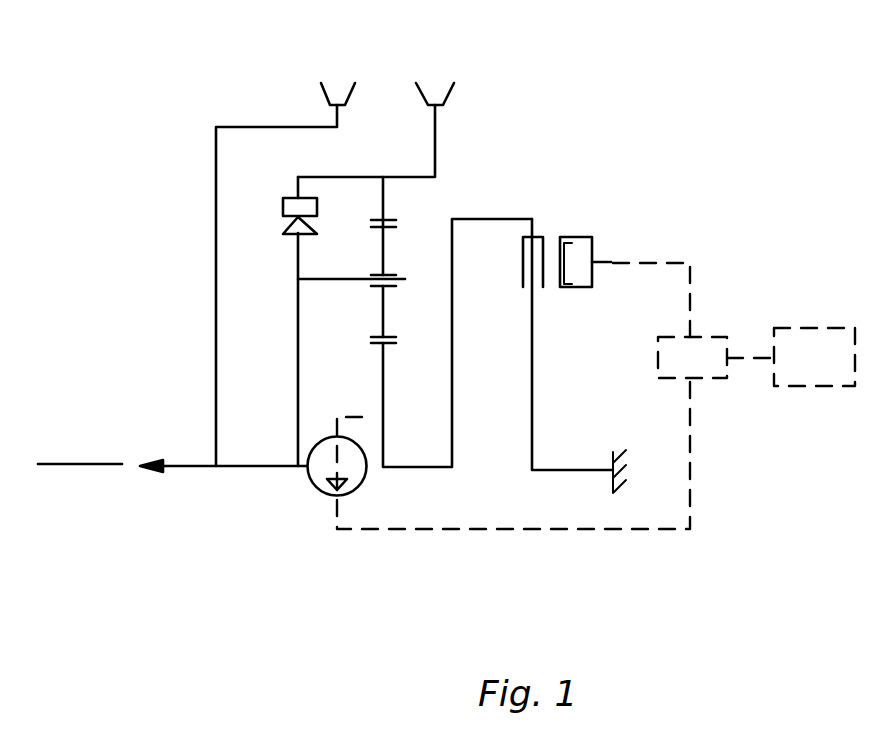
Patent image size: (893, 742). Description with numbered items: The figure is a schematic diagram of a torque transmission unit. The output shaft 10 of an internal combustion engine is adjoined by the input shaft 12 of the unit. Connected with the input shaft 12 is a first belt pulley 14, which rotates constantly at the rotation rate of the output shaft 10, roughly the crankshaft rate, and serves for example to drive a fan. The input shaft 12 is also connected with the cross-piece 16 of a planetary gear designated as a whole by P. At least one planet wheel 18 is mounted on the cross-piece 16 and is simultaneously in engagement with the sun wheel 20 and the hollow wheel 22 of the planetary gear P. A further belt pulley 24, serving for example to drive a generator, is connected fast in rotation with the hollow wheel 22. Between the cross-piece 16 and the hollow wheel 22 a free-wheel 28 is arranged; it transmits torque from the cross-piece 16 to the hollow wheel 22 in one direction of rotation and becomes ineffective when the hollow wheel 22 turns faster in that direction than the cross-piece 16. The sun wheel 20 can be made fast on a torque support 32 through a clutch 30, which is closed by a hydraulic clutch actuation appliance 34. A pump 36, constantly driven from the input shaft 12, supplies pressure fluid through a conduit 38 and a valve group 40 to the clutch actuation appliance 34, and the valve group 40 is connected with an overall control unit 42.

The output shaft 10 is at (75, 466).
The input shaft 12 is at (253, 468).
The first belt pulley 14 is at (216, 302).
The cross-piece 16 is at (298, 365).
The planet wheel 18 is at (384, 317).
The sun wheel 20 is at (383, 413).
The hollow wheel 22 is at (386, 200).
The further belt pulley 24 is at (435, 134).
The free-wheel 28 is at (284, 221).
The clutch 30 is at (538, 236).
The torque support 32 is at (533, 362).
The hydraulic clutch actuation appliance 34 is at (592, 250).
The pump 36 is at (318, 483).
The conduit 38 is at (537, 531).
The valve group 40 is at (715, 337).
The overall control unit 42 is at (812, 386).
The planetary gear P is at (410, 262).